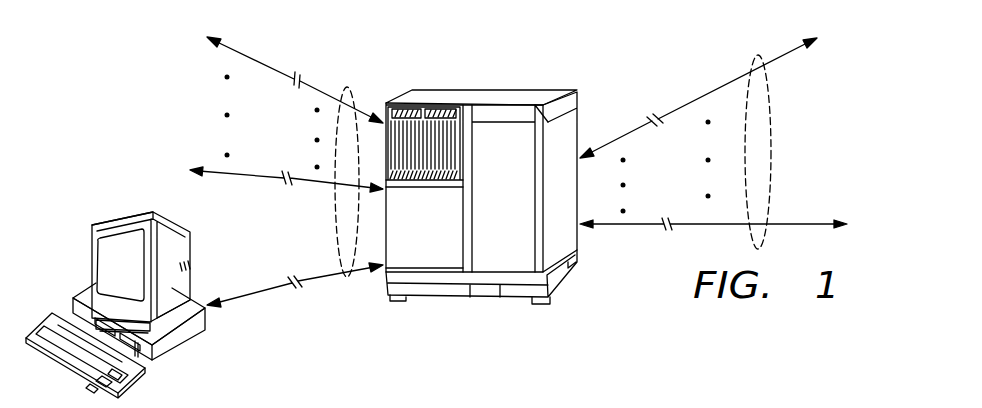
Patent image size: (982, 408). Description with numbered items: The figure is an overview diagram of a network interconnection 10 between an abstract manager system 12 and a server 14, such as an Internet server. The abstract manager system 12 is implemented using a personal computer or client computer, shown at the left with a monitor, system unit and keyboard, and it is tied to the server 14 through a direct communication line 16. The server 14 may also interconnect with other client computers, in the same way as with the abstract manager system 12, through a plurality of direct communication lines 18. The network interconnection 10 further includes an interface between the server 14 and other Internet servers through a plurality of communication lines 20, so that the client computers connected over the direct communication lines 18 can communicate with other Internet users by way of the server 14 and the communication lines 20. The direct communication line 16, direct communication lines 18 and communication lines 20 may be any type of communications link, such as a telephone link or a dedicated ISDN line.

The network interconnection 10 is at (121, 74).
The abstract manager system 12 is at (128, 228).
The server 14 is at (487, 97).
The direct communication line 16 is at (263, 293).
The direct communication lines 18 is at (346, 84).
The communication lines 20 is at (757, 55).